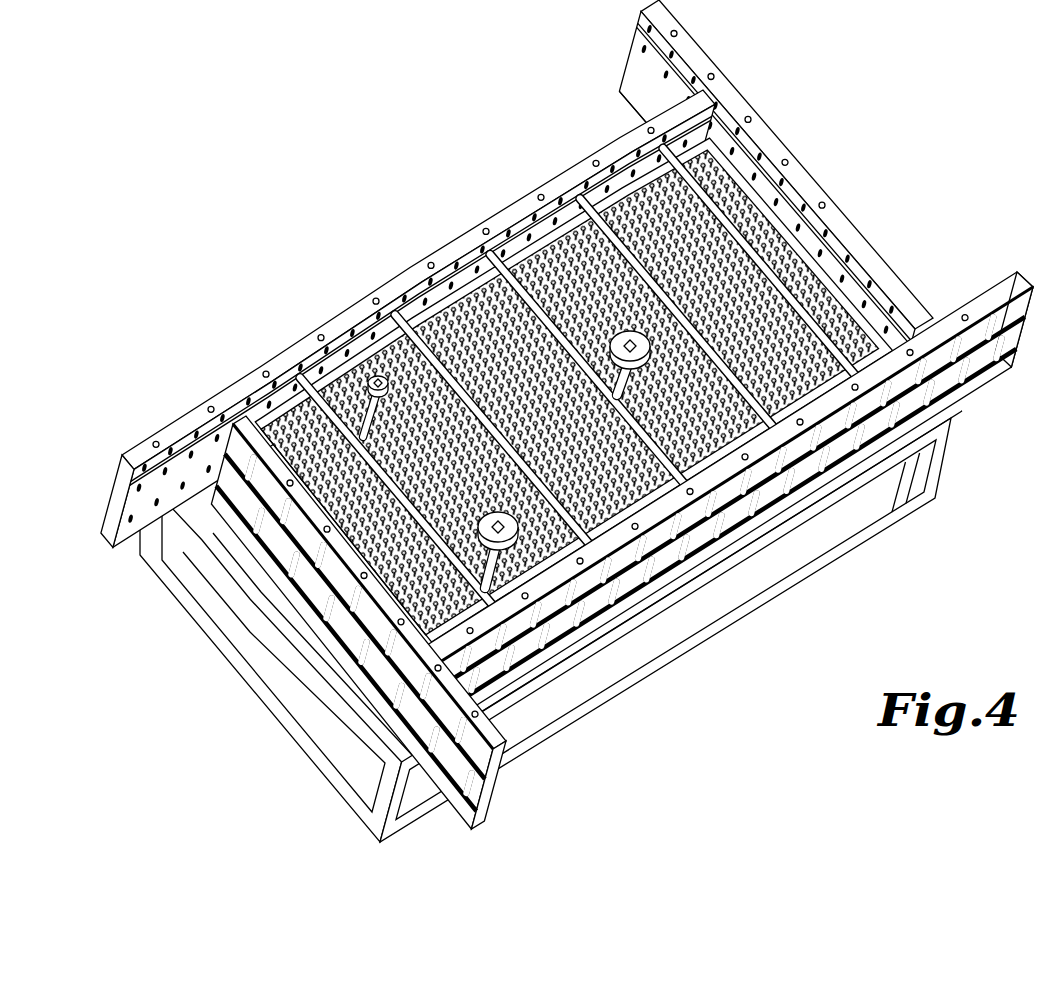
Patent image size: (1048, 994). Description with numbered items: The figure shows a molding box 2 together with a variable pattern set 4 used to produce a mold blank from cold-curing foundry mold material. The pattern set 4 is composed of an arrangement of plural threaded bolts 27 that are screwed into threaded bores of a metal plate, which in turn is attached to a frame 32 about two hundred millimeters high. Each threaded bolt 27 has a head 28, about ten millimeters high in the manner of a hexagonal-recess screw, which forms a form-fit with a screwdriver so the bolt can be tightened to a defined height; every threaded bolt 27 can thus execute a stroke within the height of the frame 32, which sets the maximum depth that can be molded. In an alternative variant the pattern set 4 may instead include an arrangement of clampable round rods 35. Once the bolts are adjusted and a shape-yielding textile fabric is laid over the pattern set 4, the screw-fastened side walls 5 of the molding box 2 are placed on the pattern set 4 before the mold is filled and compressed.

The molding box 2 is at (531, 414).
The pattern set 4 is at (437, 353).
The side walls 5 is at (110, 522).
The threaded bolt 27 is at (661, 379).
The clampable round rod 35 is at (797, 292).
The head 28 is at (862, 258).
The frame 32 is at (237, 632).